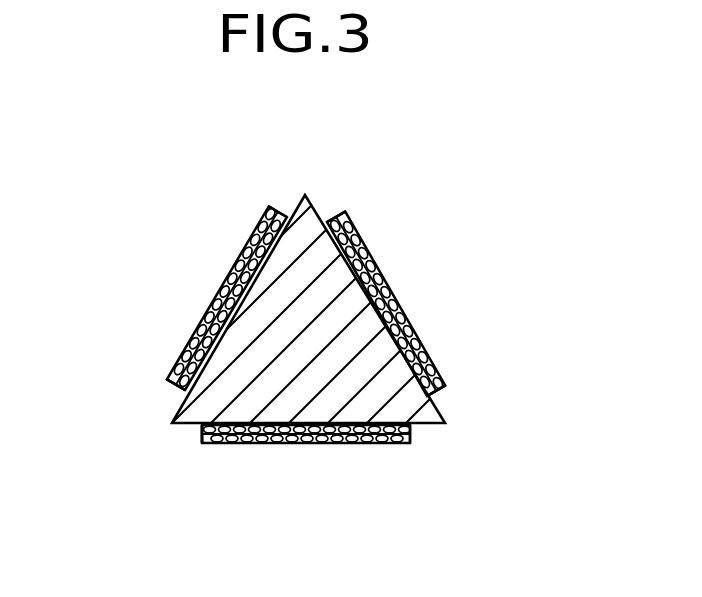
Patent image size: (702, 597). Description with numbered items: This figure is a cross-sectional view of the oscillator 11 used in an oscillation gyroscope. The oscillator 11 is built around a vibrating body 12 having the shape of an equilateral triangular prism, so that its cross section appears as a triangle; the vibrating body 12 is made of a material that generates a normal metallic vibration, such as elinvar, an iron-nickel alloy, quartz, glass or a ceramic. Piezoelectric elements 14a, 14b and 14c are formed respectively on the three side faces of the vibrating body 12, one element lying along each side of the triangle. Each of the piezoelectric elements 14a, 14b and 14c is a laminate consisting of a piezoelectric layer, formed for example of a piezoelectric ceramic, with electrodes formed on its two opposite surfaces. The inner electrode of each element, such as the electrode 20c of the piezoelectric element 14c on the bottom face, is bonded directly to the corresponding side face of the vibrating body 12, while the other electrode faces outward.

The oscillator 11 is at (72, 150).
The vibrating body 12 is at (441, 420).
The piezoelectric element 14a is at (227, 279).
The piezoelectric element 14b is at (397, 284).
The piezoelectric element 14c is at (352, 478).
The electrode 20c is at (225, 445).